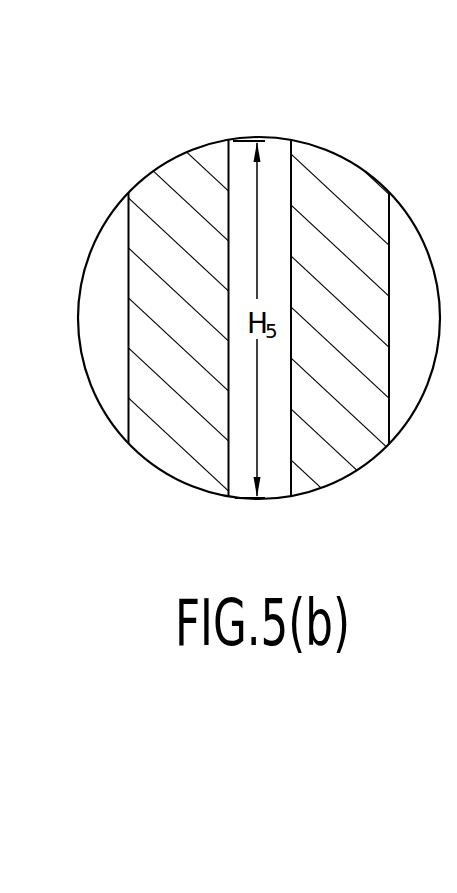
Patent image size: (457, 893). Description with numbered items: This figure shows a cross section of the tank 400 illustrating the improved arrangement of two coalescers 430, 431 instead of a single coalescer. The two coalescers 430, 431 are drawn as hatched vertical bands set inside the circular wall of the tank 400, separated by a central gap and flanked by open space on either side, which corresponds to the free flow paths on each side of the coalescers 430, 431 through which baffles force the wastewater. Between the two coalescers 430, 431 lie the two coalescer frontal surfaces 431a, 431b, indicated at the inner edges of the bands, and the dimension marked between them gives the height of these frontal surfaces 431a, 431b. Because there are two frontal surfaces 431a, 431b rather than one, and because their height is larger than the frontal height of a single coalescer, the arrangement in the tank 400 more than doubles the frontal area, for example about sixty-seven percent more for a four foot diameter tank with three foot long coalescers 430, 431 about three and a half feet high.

The tank 400 is at (106, 212).
The coalescer 430 is at (173, 453).
The coalescer 431 is at (330, 458).
The coalescer frontal surface 431a is at (288, 178).
The coalescer frontal surface 431b is at (230, 214).